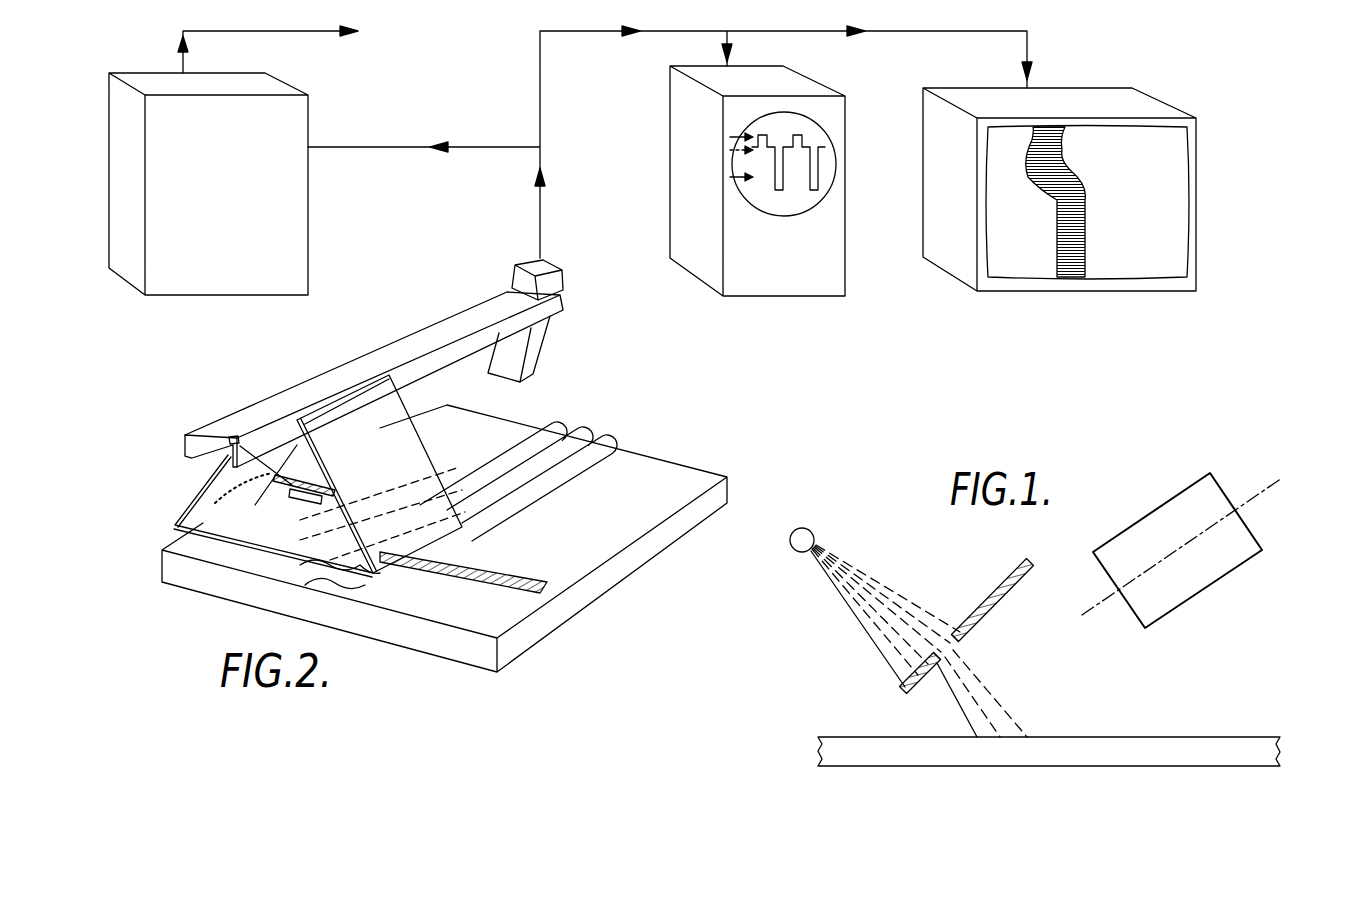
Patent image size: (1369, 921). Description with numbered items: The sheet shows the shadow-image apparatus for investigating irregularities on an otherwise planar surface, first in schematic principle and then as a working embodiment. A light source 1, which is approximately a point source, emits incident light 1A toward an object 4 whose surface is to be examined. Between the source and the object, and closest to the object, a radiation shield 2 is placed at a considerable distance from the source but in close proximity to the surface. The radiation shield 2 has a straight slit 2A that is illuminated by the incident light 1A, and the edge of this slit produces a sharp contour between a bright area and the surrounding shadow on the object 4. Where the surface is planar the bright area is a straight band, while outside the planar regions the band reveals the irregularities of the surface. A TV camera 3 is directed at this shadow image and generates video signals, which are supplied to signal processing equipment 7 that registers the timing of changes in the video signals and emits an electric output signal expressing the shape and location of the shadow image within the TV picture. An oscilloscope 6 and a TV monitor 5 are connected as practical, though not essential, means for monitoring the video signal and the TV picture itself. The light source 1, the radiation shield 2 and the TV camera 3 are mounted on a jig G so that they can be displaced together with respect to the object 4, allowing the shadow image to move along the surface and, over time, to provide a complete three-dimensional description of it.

In FIG. 2, the light source 1 is at (233, 440).
In FIG. 1, the light source 1 is at (813, 538).
In FIG. 2, the incident light 1A is at (280, 482).
In FIG. 1, the incident light 1A is at (855, 572).
In FIG. 2, the radiation shield 2 is at (260, 537).
In FIG. 1, the radiation shield 2 is at (987, 598).
In FIG. 2, the slit 2A is at (322, 503).
In FIG. 1, the slit 2A is at (947, 657).
In FIG. 2, the TV camera 3 is at (530, 367).
In FIG. 1, the TV camera 3 is at (1160, 612).
In FIG. 2, the object 4 is at (475, 618).
In FIG. 1, the object 4 is at (1025, 748).
In FIG. 2, the TV monitor 5 is at (963, 268).
In FIG. 2, the oscilloscope 6 is at (772, 283).
In FIG. 2, the signal processing equipment 7 is at (290, 250).
In FIG. 2, the jig G is at (350, 368).